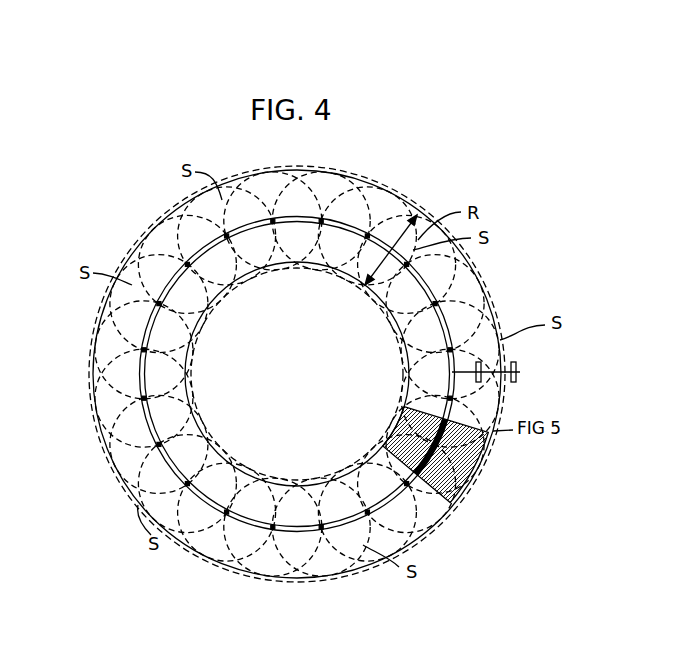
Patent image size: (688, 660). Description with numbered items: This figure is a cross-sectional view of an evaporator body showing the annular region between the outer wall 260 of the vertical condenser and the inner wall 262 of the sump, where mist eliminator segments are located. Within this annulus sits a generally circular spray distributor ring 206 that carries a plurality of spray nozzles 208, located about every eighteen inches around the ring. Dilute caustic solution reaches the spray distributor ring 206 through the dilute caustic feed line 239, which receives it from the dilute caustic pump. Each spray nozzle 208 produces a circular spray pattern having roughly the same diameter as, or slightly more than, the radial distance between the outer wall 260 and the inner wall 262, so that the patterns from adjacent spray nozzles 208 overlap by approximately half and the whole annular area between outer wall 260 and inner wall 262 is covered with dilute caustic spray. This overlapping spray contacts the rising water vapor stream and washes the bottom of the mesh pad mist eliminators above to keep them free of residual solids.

The spray distributor ring 206 is at (237, 570).
The spray nozzles 208 is at (273, 221).
The dilute caustic feed line 239 is at (520, 372).
The outer wall 260 is at (408, 318).
The inner wall 262 is at (468, 289).